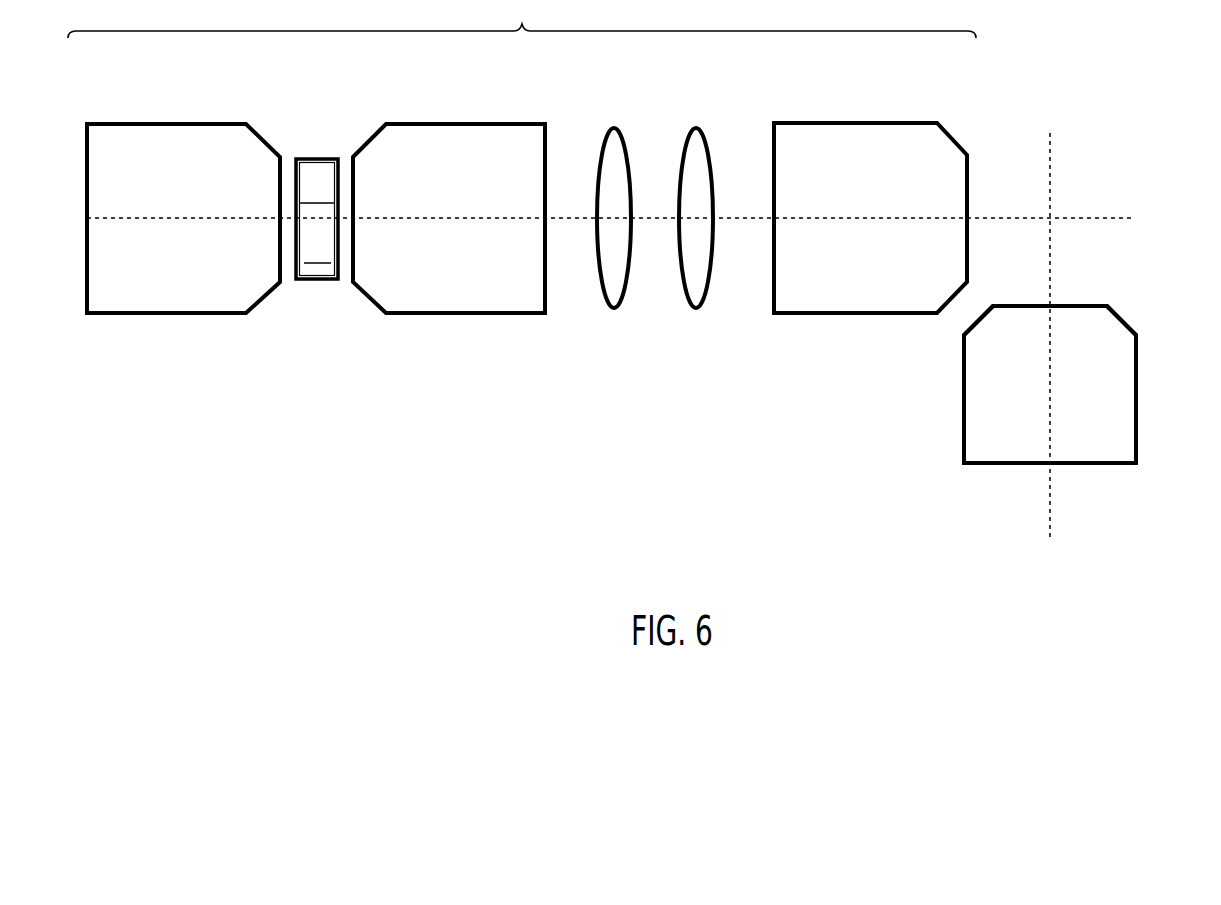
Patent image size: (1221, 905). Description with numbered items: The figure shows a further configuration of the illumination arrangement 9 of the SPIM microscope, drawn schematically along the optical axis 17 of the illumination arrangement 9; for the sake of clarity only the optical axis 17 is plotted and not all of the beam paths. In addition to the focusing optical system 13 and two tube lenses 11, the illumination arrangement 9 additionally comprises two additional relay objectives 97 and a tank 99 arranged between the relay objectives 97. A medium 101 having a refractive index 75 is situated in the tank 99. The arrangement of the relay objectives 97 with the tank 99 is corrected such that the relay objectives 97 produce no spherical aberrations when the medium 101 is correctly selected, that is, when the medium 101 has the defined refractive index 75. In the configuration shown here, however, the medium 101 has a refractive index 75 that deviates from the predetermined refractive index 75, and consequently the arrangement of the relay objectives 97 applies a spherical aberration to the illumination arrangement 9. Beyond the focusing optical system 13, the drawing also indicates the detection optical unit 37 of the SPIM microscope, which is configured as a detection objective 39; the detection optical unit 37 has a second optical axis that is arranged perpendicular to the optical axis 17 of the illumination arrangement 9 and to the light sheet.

The illumination arrangement 9 is at (522, 19).
The relay objective 97 is at (186, 298).
The tank 99 is at (317, 185).
The medium 101 is at (317, 186).
The refractive index 75 is at (317, 246).
The tube lens 11 is at (610, 134).
The focusing optical system 13 is at (838, 134).
The optical axis 17 is at (1106, 215).
The detection optical unit 37 is at (1006, 384).
The detection objective 39 is at (980, 427).